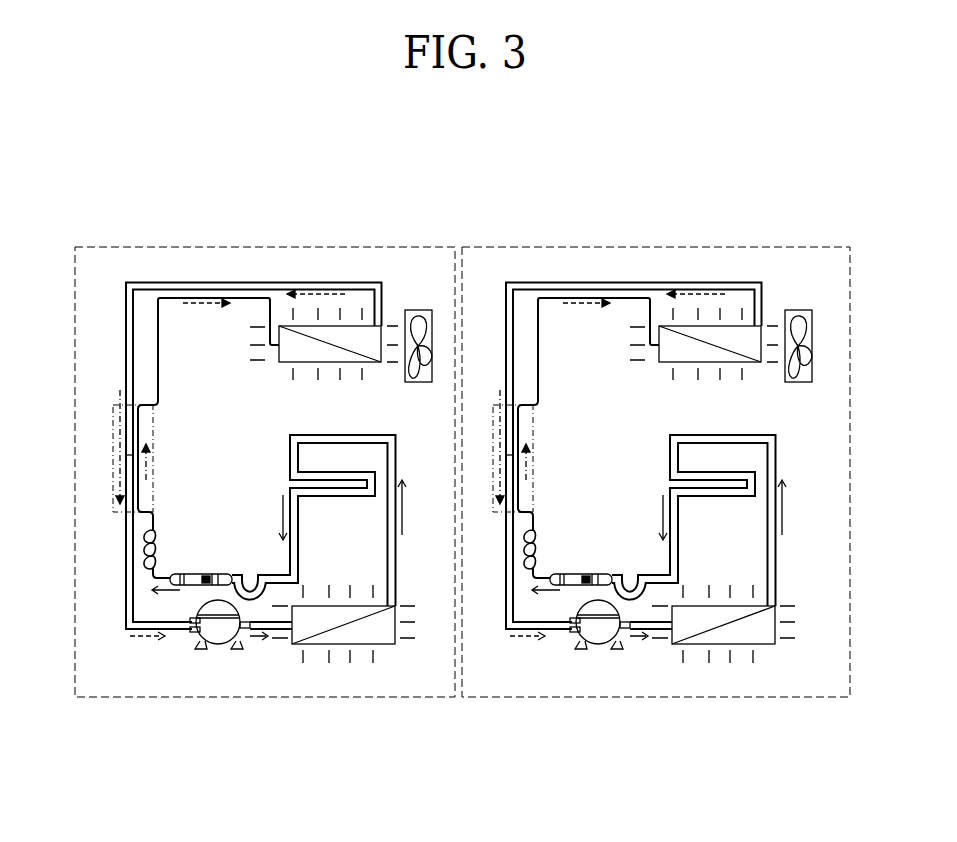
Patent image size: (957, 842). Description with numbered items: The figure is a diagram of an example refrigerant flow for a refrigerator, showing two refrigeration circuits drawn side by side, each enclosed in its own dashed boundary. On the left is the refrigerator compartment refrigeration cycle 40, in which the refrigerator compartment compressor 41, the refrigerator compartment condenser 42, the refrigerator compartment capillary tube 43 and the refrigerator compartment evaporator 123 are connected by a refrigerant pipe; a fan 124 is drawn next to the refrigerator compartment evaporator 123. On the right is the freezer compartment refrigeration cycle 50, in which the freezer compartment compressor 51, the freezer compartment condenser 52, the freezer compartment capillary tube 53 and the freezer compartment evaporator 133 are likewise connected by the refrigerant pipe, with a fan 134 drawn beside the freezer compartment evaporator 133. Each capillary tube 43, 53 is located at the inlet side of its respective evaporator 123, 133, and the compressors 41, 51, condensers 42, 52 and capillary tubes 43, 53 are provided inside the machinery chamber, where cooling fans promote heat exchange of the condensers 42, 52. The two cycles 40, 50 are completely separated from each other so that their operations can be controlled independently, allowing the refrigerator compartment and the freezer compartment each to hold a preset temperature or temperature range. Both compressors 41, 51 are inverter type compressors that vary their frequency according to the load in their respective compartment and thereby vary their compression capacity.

The refrigerator compartment refrigeration cycle 40 is at (273, 697).
The refrigerator compartment compressor 41 is at (220, 645).
The refrigerator compartment condenser 42 is at (365, 645).
The refrigerator compartment capillary tube 43 is at (141, 548).
The refrigerator compartment evaporator 123 is at (352, 326).
The refrigerator compartment evaporator fan 124 is at (413, 310).
The freezer compartment refrigeration cycle 50 is at (656, 515).
The freezer compartment compressor 51 is at (600, 676).
The freezer compartment condenser 52 is at (723, 668).
The freezer compartment capillary tube 53 is at (506, 641).
The freezer compartment evaporator 133 is at (704, 290).
The freezer compartment evaporator fan 134 is at (796, 291).